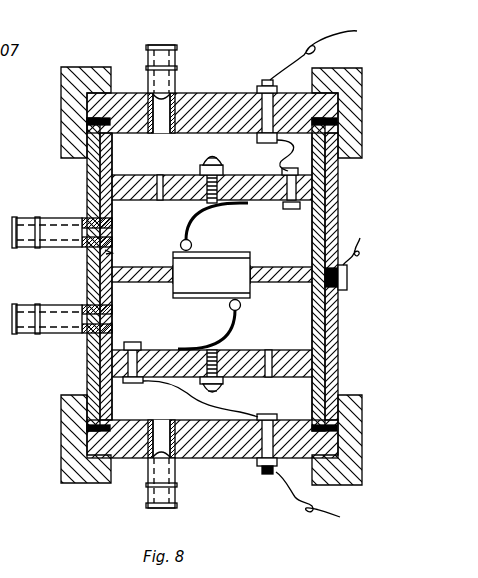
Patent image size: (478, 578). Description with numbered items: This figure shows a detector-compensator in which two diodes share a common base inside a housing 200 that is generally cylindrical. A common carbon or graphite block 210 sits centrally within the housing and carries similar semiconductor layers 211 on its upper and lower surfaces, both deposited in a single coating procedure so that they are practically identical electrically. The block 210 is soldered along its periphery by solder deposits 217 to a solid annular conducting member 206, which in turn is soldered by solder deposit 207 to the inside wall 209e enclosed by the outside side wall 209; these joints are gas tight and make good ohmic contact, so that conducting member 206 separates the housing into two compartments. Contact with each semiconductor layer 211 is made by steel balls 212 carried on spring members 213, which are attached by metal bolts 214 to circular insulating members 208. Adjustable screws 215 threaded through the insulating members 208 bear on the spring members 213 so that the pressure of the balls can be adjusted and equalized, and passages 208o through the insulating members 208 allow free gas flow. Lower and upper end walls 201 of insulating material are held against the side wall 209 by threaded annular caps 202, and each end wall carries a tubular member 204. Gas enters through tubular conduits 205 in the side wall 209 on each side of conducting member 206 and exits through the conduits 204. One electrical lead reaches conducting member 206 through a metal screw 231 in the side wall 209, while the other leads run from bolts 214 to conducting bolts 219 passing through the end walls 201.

The housing 200 is at (340, 208).
The end wall 201 is at (212, 95).
The annular cap 202 is at (88, 72).
The tubular member 204 is at (176, 51).
The tubular conduit 205 is at (25, 305).
The conducting member 206 is at (124, 268).
The solder deposit 207 is at (117, 283).
The circular insulating member 208 is at (265, 174).
The passage 208o is at (160, 175).
The side wall 209 is at (87, 374).
The inside wall 209e is at (116, 251).
The carbon or graphite block 210 is at (243, 266).
The semiconductor layer 211 is at (245, 253).
The steel ball 212 is at (193, 245).
The spring member 213 is at (197, 215).
The metal bolt 214 is at (295, 209).
The adjustable screw 215 is at (203, 156).
The solder deposit 217 is at (170, 286).
The conducting bolt 219 is at (257, 140).
The metal screw 231 is at (343, 291).